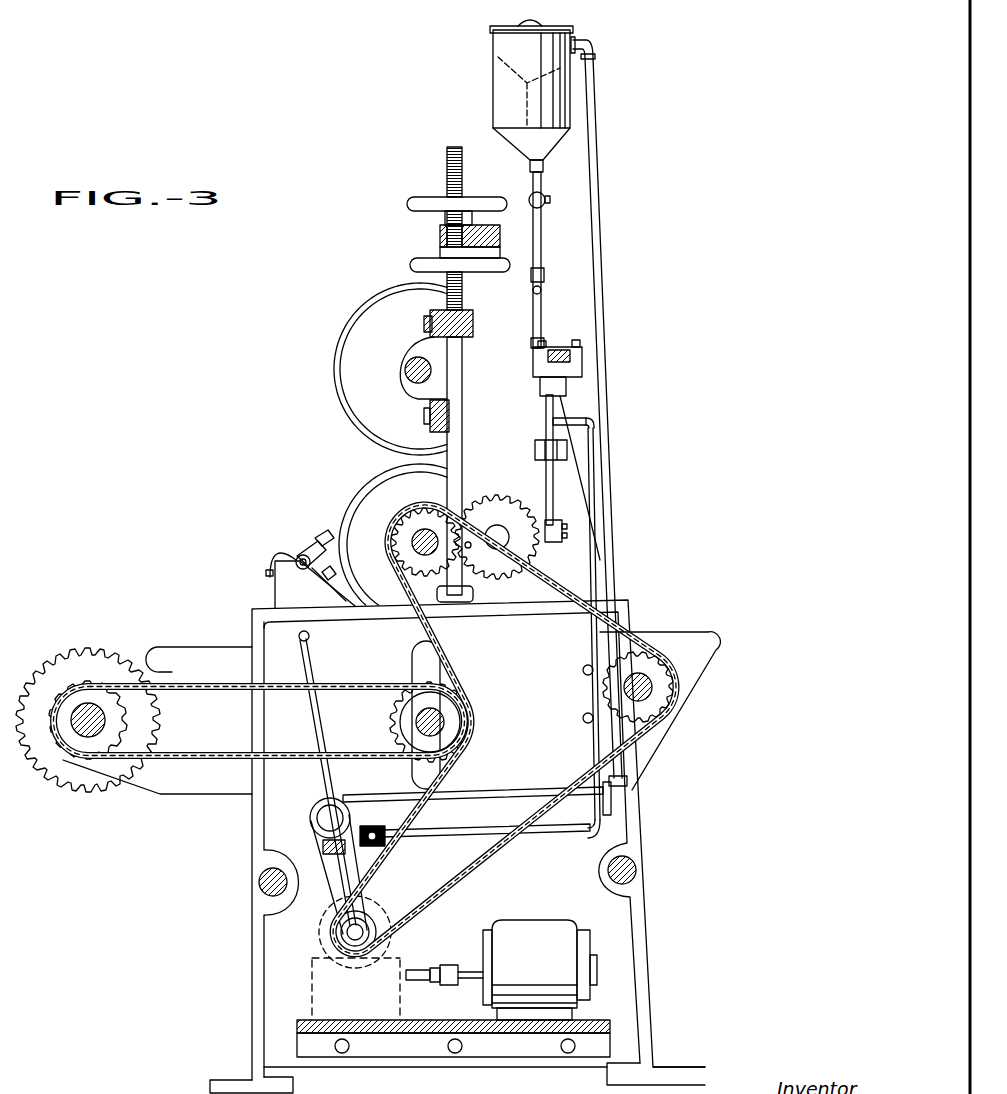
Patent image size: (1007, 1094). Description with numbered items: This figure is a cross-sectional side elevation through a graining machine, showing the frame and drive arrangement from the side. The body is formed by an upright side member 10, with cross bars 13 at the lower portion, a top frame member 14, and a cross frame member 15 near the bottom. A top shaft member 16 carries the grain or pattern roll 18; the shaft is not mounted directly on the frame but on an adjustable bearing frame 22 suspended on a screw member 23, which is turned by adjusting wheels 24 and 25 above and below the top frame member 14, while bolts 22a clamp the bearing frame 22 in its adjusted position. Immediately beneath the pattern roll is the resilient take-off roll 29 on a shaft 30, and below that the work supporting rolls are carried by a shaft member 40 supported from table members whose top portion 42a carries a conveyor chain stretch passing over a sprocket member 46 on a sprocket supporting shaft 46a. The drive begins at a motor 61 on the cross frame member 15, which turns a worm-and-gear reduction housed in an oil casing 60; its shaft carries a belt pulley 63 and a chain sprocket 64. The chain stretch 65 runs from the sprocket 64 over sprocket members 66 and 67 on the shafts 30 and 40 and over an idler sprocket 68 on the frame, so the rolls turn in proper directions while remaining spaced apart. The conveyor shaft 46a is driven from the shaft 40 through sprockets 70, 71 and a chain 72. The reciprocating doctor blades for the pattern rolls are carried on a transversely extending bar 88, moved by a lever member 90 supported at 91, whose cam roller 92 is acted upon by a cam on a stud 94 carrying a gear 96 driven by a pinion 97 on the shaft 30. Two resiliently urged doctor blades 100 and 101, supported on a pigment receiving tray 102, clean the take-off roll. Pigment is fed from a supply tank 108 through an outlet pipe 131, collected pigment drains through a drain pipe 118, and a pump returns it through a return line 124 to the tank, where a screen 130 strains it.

The upright side member 10 is at (252, 949).
The cross bar 13 is at (285, 868).
The top frame member 14 is at (497, 240).
The cross frame member 15 is at (425, 1036).
The top shaft member 16 is at (415, 362).
The grain or pattern roll 18 is at (345, 340).
The adjustable bearing frame 22 is at (462, 345).
The bolt 22a is at (432, 322).
The screw member 23 is at (464, 300).
The adjusting wheel 24 is at (410, 204).
The adjusting wheel 25 is at (413, 262).
The take-off roll 29 is at (350, 516).
The shaft 30 is at (427, 530).
The shaft member 40 is at (440, 728).
The top portion of table member 42a is at (226, 650).
The sprocket member 46 is at (50, 668).
The sprocket supporting shaft 46a is at (88, 705).
The oil casing 60 is at (311, 962).
The motor 61 is at (530, 930).
The belt pulley 63 is at (356, 945).
The chain sprocket 64 is at (372, 915).
The chain stretch 65 is at (585, 796).
The sprocket member 66 is at (452, 570).
The sprocket member 67 is at (470, 722).
The idler sprocket 68 is at (674, 688).
The sprocket 70 is at (395, 722).
The sprocket 71 is at (116, 720).
The chain 72 is at (210, 694).
The transversely extending bar 88 is at (560, 348).
The lever member 90 is at (546, 412).
The lever support 91 is at (535, 446).
The cam roller 92 is at (560, 543).
The stud 94 is at (503, 528).
The gear 96 is at (501, 494).
The pinion 97 is at (470, 548).
The doctor blade 100 is at (326, 526).
The doctor blade 101 is at (346, 573).
The pigment receiving tray 102 is at (315, 584).
The supply tank 108 is at (510, 100).
The drain pipe 118 is at (330, 718).
The return line 124 is at (600, 245).
The screen 130 is at (508, 78).
The outlet pipe 131 is at (542, 183).